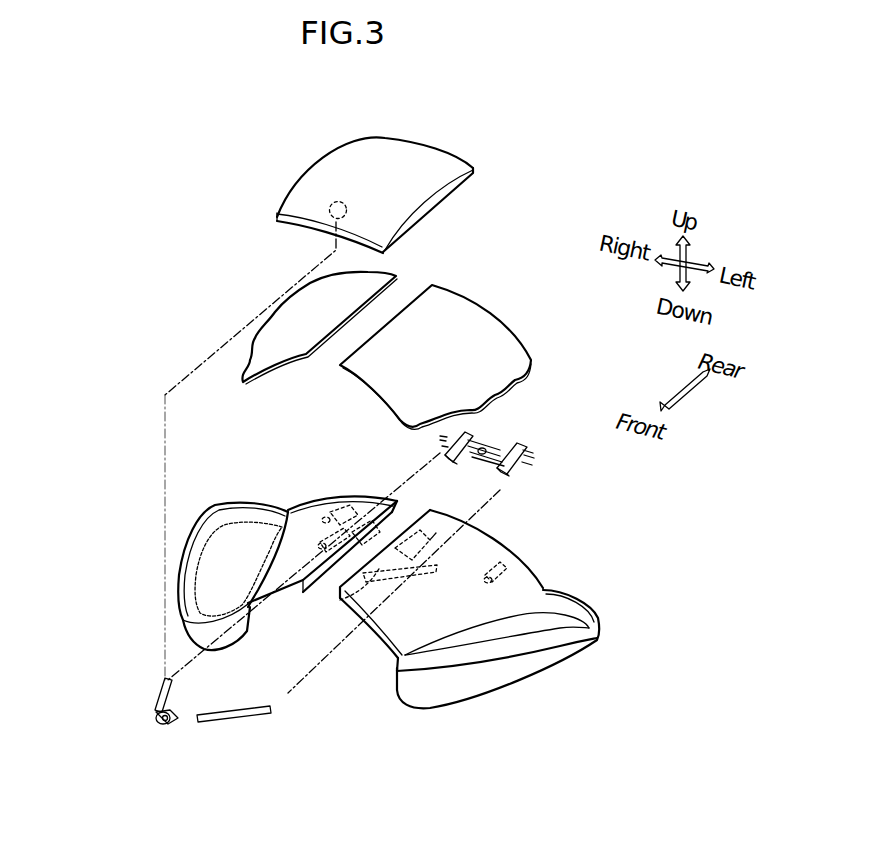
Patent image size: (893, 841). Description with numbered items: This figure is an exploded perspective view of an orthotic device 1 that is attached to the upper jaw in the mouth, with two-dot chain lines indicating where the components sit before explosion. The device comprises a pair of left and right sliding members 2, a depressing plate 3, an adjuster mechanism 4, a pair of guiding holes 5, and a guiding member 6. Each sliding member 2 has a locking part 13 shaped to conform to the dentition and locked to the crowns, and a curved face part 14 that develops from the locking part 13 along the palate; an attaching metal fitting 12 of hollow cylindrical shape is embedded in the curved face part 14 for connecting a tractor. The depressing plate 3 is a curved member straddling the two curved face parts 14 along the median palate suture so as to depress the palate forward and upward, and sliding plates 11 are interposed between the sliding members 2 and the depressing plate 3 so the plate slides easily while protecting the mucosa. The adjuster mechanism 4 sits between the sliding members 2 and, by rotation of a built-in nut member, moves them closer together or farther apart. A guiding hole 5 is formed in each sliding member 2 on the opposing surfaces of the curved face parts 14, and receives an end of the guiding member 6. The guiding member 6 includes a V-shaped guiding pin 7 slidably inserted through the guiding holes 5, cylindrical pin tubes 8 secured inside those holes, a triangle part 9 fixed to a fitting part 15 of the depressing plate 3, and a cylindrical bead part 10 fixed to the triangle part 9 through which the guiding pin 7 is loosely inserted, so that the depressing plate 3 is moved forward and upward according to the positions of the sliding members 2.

The orthotic device 1 is at (86, 263).
The sliding member 2 is at (644, 550).
The depressing plate 3 is at (476, 166).
The adjuster mechanism 4 is at (518, 433).
The guiding hole 5 is at (326, 575).
The guiding member 6 is at (124, 680).
The guiding pin 7 is at (190, 723).
The pin tube 8 is at (170, 690).
The triangle part 9 is at (155, 721).
The bead part 10 is at (159, 725).
The sliding plate 11 is at (396, 278).
The attaching metal fitting 12 is at (335, 505).
The locking part 13 is at (236, 502).
The curved face part 14 is at (310, 507).
The fitting part 15 is at (330, 219).